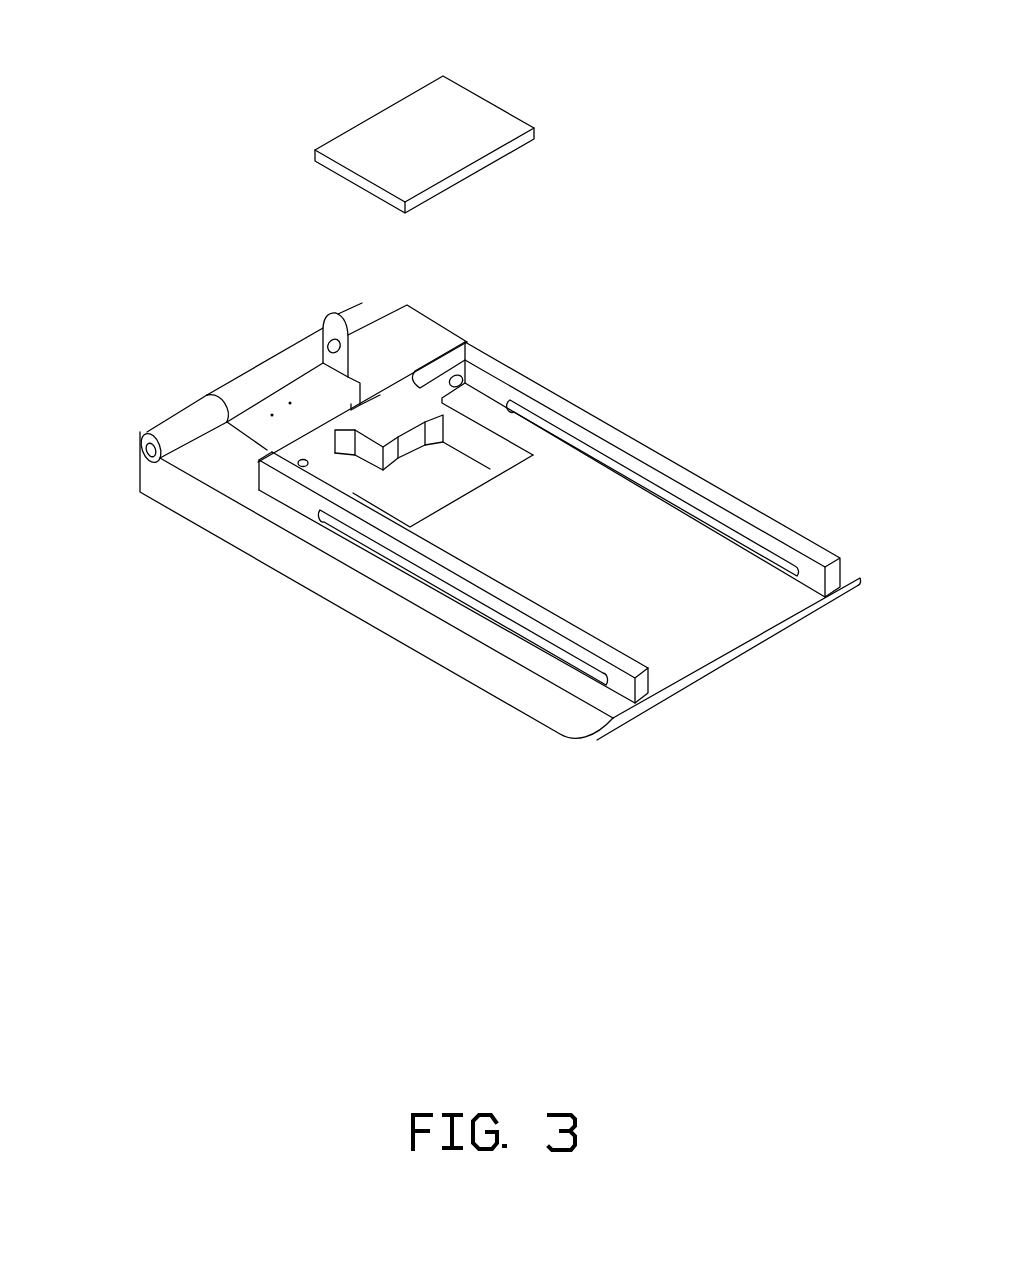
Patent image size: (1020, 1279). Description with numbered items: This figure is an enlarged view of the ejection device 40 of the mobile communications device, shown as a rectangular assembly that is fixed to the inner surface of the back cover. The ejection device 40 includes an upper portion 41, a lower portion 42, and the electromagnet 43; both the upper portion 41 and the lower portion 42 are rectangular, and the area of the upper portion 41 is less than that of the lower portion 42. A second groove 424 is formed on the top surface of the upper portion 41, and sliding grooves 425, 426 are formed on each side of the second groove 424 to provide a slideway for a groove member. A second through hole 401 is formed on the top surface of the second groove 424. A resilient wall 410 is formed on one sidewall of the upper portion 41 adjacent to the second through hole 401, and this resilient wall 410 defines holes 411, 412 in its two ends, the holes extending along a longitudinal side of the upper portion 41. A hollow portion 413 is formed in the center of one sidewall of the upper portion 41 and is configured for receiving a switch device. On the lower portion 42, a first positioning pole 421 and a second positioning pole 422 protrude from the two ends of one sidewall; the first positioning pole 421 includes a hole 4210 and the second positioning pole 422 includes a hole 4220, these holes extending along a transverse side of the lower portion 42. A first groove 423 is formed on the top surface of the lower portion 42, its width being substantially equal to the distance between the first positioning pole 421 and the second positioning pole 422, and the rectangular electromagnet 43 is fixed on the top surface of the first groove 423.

The ejection device 40 is at (234, 58).
The upper portion 41 is at (598, 428).
The lower portion 42 is at (215, 460).
The electromagnet 43 is at (465, 121).
The second through hole 401 is at (470, 478).
The resilient wall 410 is at (450, 358).
The hole 411 is at (458, 380).
The hole 412 is at (303, 467).
The hollow portion 413 is at (372, 398).
The first positioning pole 421 is at (378, 310).
The hole 4210 is at (328, 342).
The second positioning pole 422 is at (187, 415).
The hole 4220 is at (147, 449).
The first groove 423 is at (347, 477).
The second groove 424 is at (729, 614).
The sliding groove 425 is at (665, 497).
The sliding groove 426 is at (580, 663).